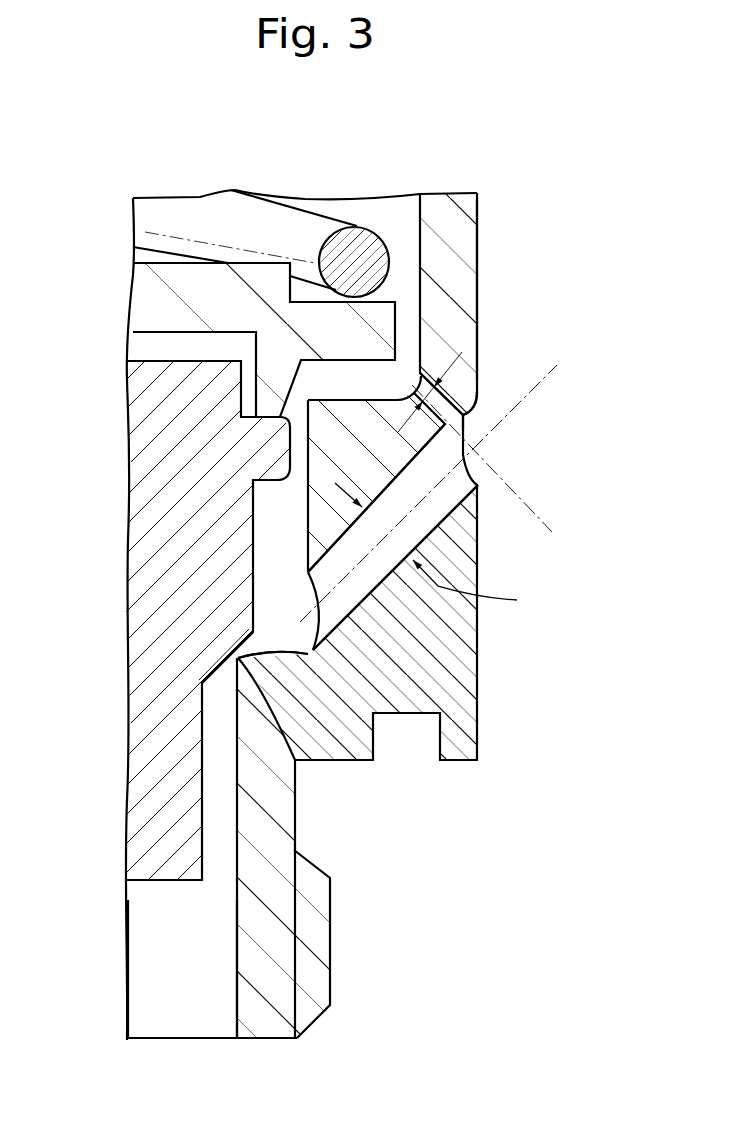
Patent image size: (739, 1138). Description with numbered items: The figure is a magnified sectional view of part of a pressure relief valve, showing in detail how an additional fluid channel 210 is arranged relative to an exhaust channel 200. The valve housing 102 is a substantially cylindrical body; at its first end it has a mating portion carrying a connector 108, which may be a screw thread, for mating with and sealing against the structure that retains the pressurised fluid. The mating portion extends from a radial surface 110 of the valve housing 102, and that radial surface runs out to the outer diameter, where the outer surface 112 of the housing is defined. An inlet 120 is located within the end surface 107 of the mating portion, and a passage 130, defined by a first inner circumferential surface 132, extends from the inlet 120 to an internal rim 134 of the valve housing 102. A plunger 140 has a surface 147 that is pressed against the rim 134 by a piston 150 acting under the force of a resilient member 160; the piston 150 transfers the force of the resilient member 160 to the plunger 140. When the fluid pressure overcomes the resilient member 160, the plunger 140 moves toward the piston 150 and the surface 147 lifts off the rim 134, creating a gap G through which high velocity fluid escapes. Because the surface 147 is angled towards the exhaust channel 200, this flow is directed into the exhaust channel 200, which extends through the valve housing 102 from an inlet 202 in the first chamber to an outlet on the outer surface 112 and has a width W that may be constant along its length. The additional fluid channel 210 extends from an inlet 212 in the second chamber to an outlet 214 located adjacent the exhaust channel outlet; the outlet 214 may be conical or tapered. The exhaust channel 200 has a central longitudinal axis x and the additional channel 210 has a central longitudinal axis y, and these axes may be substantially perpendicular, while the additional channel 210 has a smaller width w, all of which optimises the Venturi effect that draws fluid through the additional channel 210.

The valve housing 102 is at (448, 217).
The end surface 107 is at (275, 1040).
The connector 108 is at (318, 978).
The radial surface 110 is at (462, 762).
The outer surface 112 is at (479, 237).
The inlet 120 is at (183, 1040).
The passage 130 is at (157, 1008).
The first inner circumferential surface 132 is at (237, 963).
The internal rim 134 is at (296, 762).
The plunger 140 is at (168, 528).
The surface 147 is at (210, 684).
The piston 150 is at (150, 300).
The resilient member 160 is at (357, 226).
The exhaust channel 200 is at (352, 598).
The inlet 202 is at (310, 577).
The additional fluid channel 210 is at (427, 372).
The inlet 212 is at (407, 397).
The outlet 214 is at (465, 415).
The gap G is at (313, 650).
The width W is at (437, 550).
The width w is at (462, 352).
The central longitudinal axis x is at (548, 377).
The central longitudinal axis y is at (548, 525).